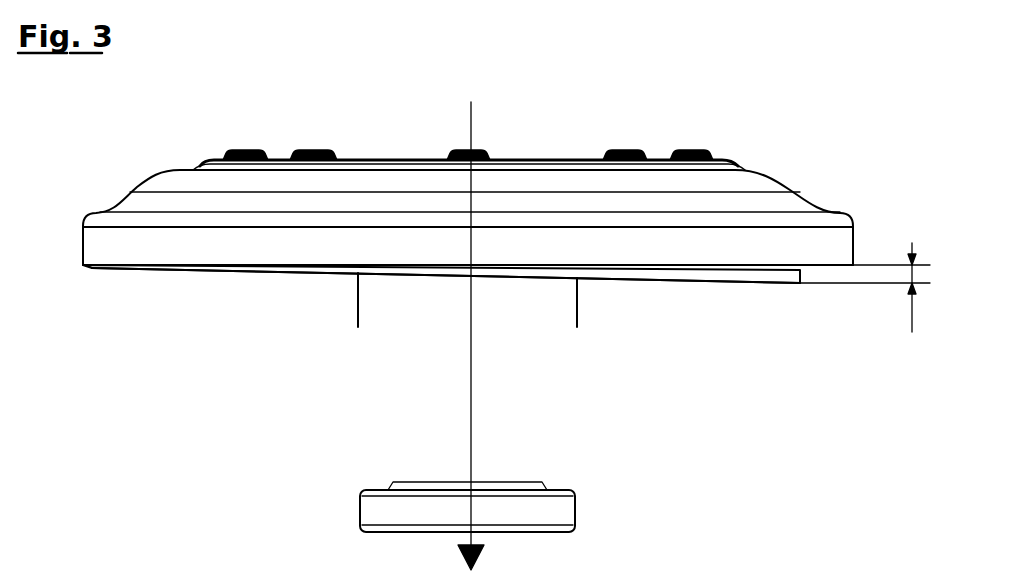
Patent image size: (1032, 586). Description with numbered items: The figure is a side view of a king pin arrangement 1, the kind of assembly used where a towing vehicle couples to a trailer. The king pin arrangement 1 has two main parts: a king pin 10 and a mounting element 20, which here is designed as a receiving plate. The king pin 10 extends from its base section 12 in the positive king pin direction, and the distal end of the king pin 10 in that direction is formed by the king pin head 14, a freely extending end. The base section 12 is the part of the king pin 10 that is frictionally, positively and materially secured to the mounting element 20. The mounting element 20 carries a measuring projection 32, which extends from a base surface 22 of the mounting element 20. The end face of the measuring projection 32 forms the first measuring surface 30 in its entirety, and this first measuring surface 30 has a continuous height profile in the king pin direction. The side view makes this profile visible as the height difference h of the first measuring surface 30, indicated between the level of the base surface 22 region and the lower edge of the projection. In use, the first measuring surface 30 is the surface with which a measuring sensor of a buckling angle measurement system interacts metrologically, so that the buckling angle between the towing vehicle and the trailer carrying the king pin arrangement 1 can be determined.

The king pin arrangement 1 is at (753, 155).
The king pin 10 is at (323, 425).
The base section 12 is at (342, 281).
The king pin head 14 is at (558, 510).
The mounting element 20 is at (168, 185).
The base surface 22 is at (93, 270).
The first measuring surface 30 is at (713, 282).
The measuring projection 32 is at (657, 273).
The height difference h is at (907, 273).